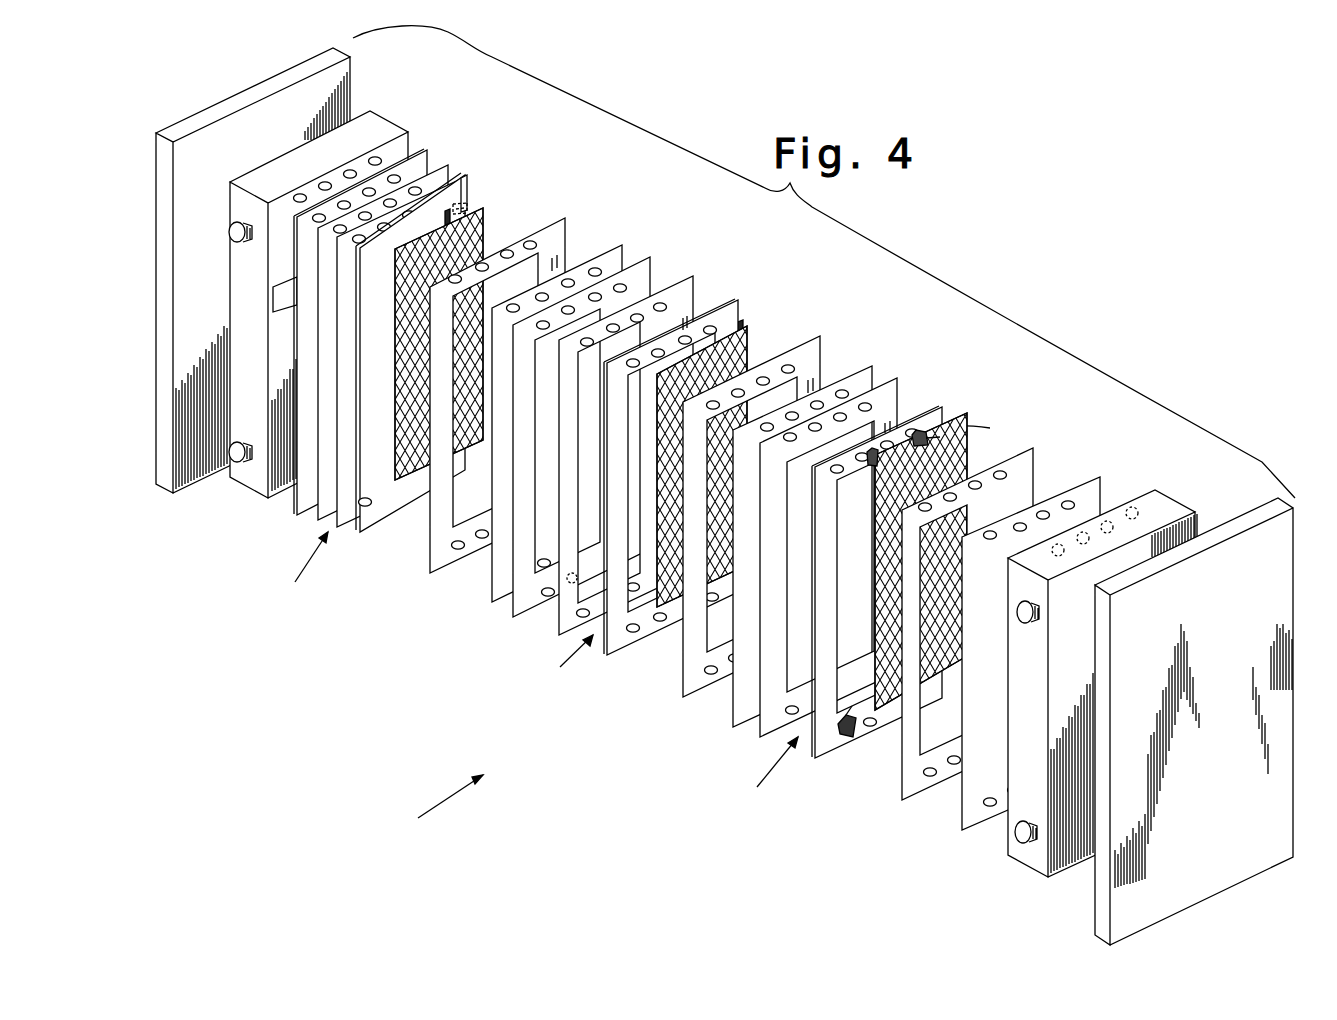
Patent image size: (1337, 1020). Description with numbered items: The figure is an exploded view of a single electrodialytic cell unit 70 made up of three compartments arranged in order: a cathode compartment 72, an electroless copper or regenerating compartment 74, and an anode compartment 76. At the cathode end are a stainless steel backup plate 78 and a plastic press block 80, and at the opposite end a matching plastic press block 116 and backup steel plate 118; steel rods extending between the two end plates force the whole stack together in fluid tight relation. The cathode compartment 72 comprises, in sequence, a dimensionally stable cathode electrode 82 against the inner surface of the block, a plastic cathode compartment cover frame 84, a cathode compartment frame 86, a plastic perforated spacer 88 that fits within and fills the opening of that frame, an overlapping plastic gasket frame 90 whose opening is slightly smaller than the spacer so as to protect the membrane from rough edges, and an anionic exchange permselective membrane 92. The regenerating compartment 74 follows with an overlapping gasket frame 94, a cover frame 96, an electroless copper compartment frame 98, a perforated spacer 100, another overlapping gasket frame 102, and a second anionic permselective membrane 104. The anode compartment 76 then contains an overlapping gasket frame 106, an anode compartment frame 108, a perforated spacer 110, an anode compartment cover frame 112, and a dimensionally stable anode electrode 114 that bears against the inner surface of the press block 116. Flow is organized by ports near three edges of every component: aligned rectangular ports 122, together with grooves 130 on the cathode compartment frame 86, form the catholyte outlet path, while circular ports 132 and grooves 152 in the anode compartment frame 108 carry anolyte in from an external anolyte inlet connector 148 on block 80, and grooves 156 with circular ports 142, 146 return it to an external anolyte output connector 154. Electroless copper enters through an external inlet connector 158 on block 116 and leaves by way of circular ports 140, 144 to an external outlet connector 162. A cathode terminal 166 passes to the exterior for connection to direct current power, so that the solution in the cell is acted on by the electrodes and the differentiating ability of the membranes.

The electrodialytic cell unit 70 is at (436, 810).
The cathode compartment 72 is at (298, 568).
The electroless copper or regenerating compartment 74 is at (552, 676).
The anode compartment 76 is at (765, 778).
The backup plate 78 is at (192, 452).
The press block 80 is at (258, 482).
The cathode electrode 82 is at (292, 516).
The cathode compartment cover frame 84 is at (315, 522).
The cathode compartment frame 86 is at (345, 527).
The perforated spacer 88 is at (410, 410).
The gasket frame 90 is at (430, 552).
The anionic exchange permselective membrane 92 is at (496, 580).
The gasket frame 94 is at (515, 612).
The electroless copper compartment cover frame 96 is at (558, 628).
The electroless copper compartment frame 98 is at (607, 657).
The perforated spacer 100 is at (753, 350).
The gasket frame 102 is at (690, 676).
The anionic permselective membrane 104 is at (735, 727).
The gasket frame 106 is at (773, 718).
The anode compartment frame 108 is at (822, 756).
The perforated spacer 110 is at (878, 640).
The anode compartment cover frame 112 is at (918, 792).
The anode electrode 114 is at (965, 826).
The press block 116 is at (1030, 858).
The backup steel plate 118 is at (1275, 565).
The rectangular ports 122 is at (470, 206).
The grooves 130 is at (470, 199).
The circular ports 132 is at (366, 507).
The circular ports 140 is at (545, 325).
The circular ports 142 is at (570, 308).
The circular ports 144 is at (622, 287).
The circular ports 146 is at (464, 177).
The external anolyte inlet connector 148 is at (236, 458).
The grooves 152 is at (846, 738).
The external anolyte output connector 154 is at (230, 230).
The grooves 156 is at (940, 437).
The external electroless copper inlet connector 158 is at (1036, 826).
The external electroless copper outlet connector 162 is at (1035, 615).
The cathode terminal 166 is at (270, 300).